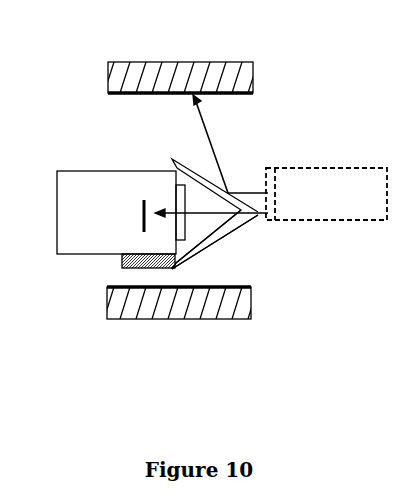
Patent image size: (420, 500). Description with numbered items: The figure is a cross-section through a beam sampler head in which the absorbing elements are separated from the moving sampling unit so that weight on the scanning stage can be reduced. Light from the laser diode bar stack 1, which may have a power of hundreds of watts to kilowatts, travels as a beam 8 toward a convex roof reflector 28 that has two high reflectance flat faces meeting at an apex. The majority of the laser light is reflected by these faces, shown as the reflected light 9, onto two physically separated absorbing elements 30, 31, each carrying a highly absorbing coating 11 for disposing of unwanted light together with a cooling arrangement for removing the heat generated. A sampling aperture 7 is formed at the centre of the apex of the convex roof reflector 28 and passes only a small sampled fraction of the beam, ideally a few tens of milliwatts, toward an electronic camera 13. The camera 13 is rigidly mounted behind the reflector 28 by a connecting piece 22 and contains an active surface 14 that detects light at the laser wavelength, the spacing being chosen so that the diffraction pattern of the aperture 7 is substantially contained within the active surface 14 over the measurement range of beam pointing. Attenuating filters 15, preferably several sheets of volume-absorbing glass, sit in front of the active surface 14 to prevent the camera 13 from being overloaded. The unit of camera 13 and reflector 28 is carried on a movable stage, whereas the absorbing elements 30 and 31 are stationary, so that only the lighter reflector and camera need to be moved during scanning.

The laser diode bar stack 1 is at (314, 166).
The sampling aperture 7 is at (260, 217).
The transmitted light beam 8 is at (211, 205).
The reflected light beam 9 is at (210, 144).
The coating 11 is at (237, 96).
The electronic camera 13 is at (73, 171).
The active surface 14 is at (141, 200).
The attenuating filters 15 is at (177, 194).
The connecting piece 22 is at (128, 261).
The convex roof reflector 28 is at (212, 238).
The absorbing element 30 is at (253, 84).
The absorbing element 31 is at (254, 305).